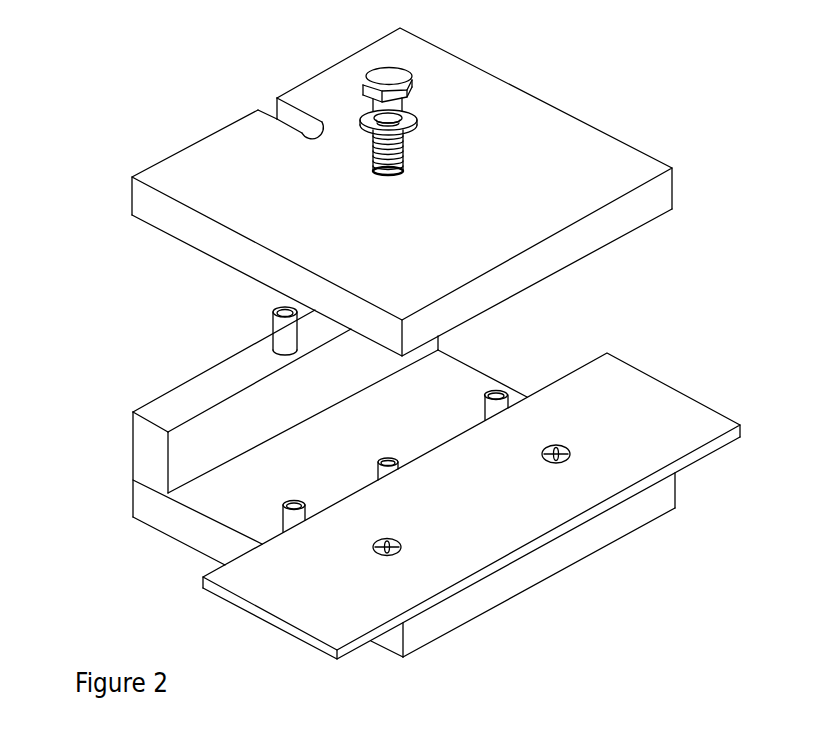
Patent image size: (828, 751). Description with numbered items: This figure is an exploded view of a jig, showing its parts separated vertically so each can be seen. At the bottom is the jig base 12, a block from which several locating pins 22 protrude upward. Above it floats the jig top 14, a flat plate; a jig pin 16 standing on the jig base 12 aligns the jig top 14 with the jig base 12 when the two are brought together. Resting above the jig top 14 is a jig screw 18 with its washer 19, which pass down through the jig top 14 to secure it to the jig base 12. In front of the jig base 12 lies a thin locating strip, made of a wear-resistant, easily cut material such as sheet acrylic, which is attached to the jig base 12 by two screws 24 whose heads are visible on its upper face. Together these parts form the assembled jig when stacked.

The jig base 12 is at (220, 541).
The jig top 14 is at (623, 174).
The jig pin 16 is at (285, 332).
The jig screw 18 is at (393, 77).
The washer 19 is at (408, 121).
The locating pins 22 is at (280, 515).
The screws 24 is at (402, 550).